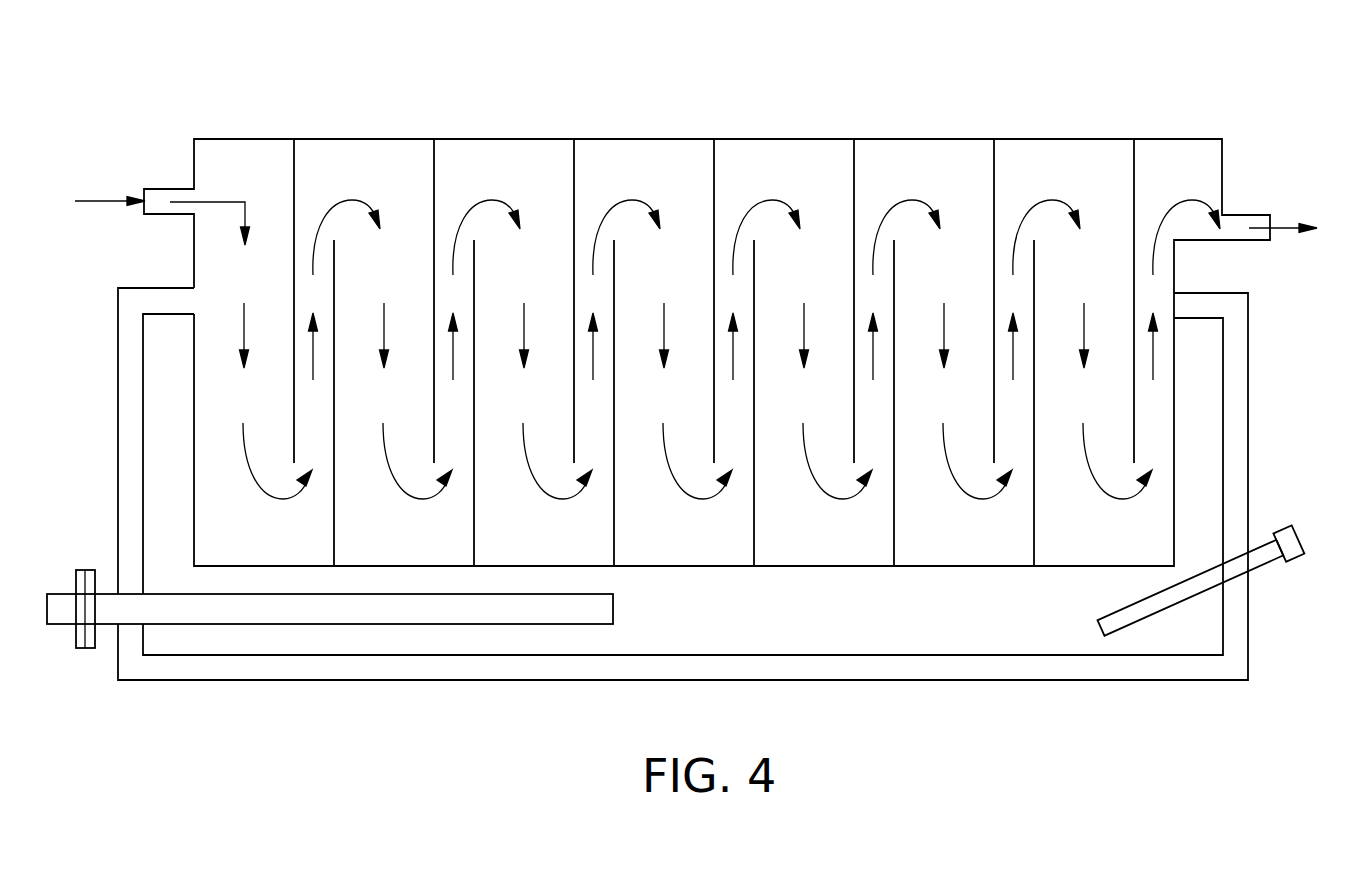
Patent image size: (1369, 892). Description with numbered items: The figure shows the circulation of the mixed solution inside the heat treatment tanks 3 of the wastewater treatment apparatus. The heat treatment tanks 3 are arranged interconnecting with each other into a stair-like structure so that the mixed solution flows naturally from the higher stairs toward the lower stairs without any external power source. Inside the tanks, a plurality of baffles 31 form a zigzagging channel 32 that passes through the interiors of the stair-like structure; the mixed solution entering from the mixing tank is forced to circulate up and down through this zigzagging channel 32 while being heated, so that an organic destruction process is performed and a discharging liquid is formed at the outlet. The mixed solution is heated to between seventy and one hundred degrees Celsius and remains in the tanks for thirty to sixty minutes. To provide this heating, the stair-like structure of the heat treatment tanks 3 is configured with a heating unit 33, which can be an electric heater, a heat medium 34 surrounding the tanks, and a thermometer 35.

The heat treatment tank 3 is at (171, 122).
The baffle 31 is at (293, 185).
The zigzagging channel 32 is at (277, 548).
The heating unit 33 is at (110, 600).
The heat medium 34 is at (871, 631).
The thermometer 35 is at (1285, 532).